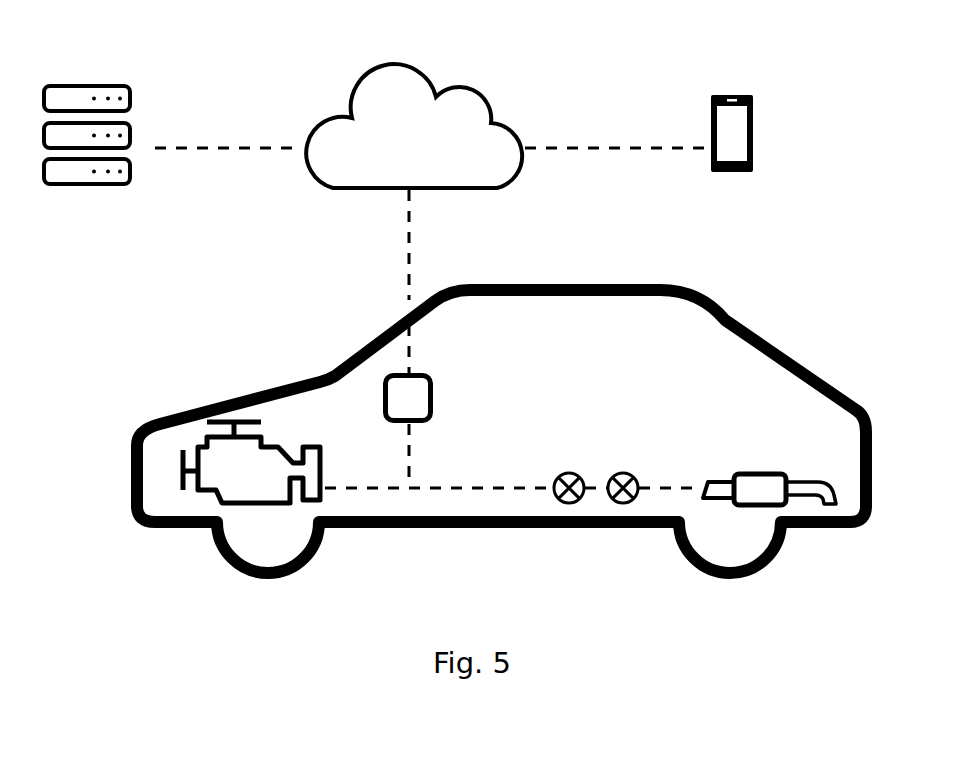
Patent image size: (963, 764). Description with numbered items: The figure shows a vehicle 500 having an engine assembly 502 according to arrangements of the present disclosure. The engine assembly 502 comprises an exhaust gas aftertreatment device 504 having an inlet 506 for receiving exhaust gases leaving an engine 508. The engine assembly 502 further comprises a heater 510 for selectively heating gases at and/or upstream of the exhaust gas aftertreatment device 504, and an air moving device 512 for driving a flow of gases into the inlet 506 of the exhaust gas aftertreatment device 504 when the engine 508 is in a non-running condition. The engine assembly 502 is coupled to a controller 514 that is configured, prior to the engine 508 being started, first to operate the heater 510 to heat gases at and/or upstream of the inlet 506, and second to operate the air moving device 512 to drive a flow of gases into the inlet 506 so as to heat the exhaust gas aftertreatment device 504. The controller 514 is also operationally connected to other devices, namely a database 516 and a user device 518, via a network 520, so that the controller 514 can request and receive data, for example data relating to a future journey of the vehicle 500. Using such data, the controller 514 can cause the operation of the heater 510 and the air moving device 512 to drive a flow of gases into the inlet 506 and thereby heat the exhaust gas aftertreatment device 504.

The vehicle 500 is at (365, 350).
The engine assembly 502 is at (553, 413).
The exhaust gas aftertreatment device 504 is at (768, 498).
The inlet 506 is at (705, 481).
The engine 508 is at (222, 452).
The heater 510 is at (623, 503).
The air moving device 512 is at (569, 503).
The controller 514 is at (422, 374).
The database 516 is at (140, 133).
The user device 518 is at (753, 133).
The network 520 is at (488, 106).